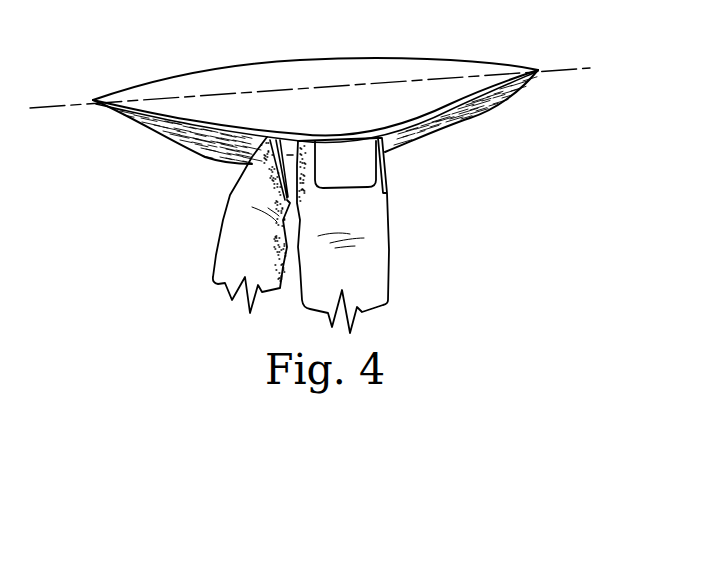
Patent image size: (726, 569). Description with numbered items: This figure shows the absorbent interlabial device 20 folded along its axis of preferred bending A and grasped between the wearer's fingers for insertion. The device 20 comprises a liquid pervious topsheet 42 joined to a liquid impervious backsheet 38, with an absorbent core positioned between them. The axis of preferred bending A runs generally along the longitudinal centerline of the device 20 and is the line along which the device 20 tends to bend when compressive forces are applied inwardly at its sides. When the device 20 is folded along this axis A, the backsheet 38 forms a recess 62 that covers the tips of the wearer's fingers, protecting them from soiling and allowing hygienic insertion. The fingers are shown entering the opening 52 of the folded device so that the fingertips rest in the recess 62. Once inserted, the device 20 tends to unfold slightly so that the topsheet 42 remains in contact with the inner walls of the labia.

The absorbent interlabial device 20 is at (322, 172).
The liquid pervious topsheet 42 is at (435, 68).
The liquid impervious backsheet 38 is at (163, 135).
The recess 62 is at (432, 122).
The slot 52 is at (273, 142).
The axis of preferred bending A is at (553, 72).